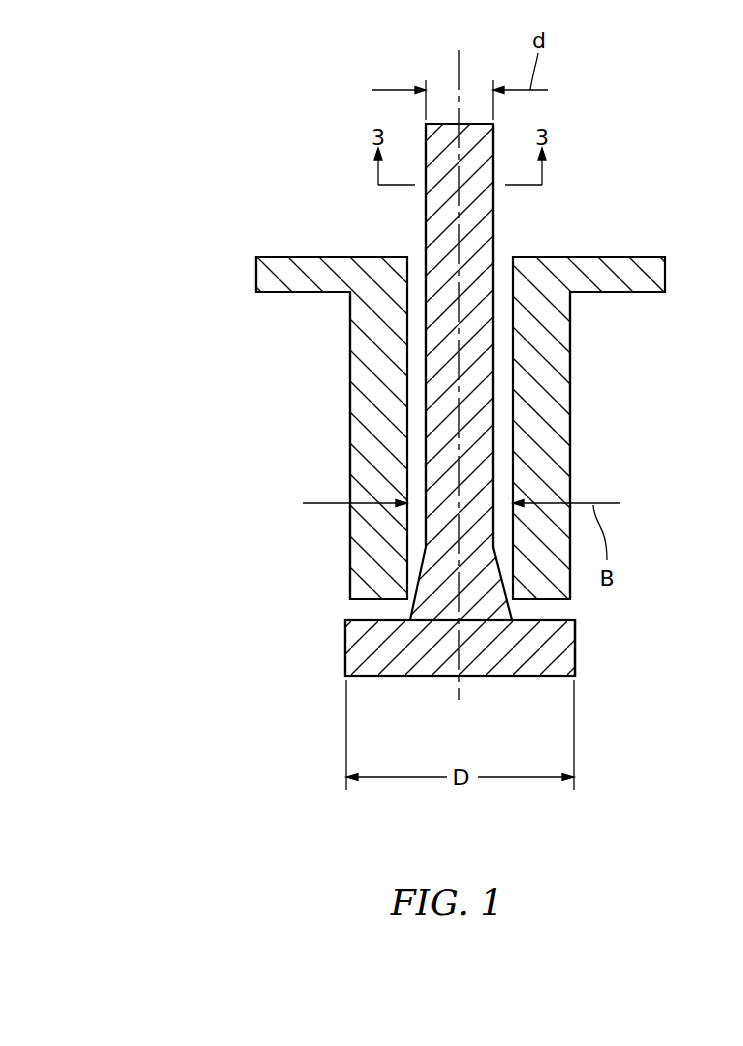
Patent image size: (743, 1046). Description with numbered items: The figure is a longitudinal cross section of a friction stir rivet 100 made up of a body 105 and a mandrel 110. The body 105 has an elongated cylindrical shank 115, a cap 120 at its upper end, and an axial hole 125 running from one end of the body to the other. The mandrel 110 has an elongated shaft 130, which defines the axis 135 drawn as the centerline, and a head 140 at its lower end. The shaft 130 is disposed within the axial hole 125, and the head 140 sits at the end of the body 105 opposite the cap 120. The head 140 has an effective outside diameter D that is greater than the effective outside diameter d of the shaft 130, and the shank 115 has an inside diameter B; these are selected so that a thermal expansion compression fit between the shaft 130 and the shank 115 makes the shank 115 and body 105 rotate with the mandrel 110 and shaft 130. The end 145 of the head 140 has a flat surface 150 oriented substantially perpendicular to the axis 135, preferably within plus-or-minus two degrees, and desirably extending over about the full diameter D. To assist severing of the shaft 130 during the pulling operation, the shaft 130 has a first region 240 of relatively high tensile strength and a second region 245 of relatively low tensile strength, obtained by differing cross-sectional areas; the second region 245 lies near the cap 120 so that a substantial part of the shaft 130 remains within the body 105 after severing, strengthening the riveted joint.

The friction stir rivet 100 is at (682, 110).
The body 105 is at (342, 315).
The mandrel 110 is at (426, 232).
The shank 115 is at (349, 448).
The cap 120 is at (255, 273).
The axial hole 125 is at (505, 253).
The shaft 130 is at (495, 425).
The axis 135 is at (458, 67).
The head 140 is at (345, 635).
The end of mandrel head 145 is at (580, 678).
The flat surface 150 is at (365, 678).
The first region 240 is at (475, 440).
The second region 245 is at (468, 312).